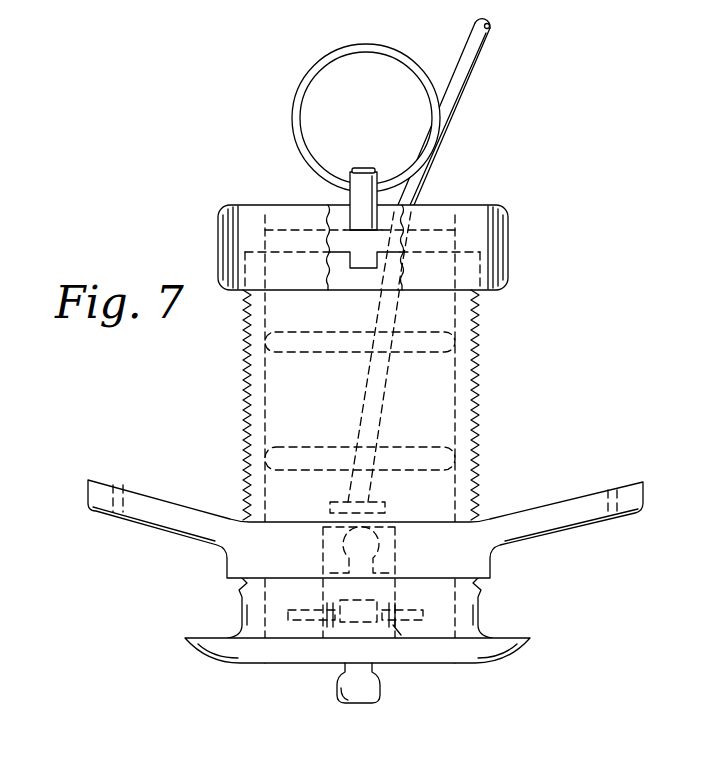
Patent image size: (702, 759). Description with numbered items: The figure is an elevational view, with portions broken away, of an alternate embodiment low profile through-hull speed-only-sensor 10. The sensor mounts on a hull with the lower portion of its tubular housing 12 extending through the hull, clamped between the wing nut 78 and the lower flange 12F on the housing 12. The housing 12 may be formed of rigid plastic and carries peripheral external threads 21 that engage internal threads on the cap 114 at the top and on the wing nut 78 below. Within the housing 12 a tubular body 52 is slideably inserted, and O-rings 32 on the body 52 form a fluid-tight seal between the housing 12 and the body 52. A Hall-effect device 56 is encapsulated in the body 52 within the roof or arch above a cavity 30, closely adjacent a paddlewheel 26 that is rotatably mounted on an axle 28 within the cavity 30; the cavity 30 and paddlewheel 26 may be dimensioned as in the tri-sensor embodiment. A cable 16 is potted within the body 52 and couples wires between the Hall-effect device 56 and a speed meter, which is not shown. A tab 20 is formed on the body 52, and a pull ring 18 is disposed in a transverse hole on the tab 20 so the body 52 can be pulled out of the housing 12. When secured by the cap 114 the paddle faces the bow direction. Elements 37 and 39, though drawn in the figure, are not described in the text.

The through-hull speed-only-sensor 10 is at (585, 278).
The tubular housing 12 is at (387, 439).
The lower flange 12F is at (510, 657).
The cap 114 is at (508, 245).
The cable 16 is at (476, 58).
The pull ring 18 is at (390, 60).
The tab 20 is at (360, 265).
The peripheral external threads 21 is at (478, 425).
The paddlewheel 26 is at (388, 690).
The axle 28 is at (398, 613).
The cavity 30 is at (395, 559).
The O-rings 32 is at (468, 338).
The pin end 37 is at (396, 628).
The pin 39 is at (338, 606).
The tubular body 52 is at (438, 430).
The Hall-effect device 56 is at (386, 507).
The wing nut 78 is at (133, 497).